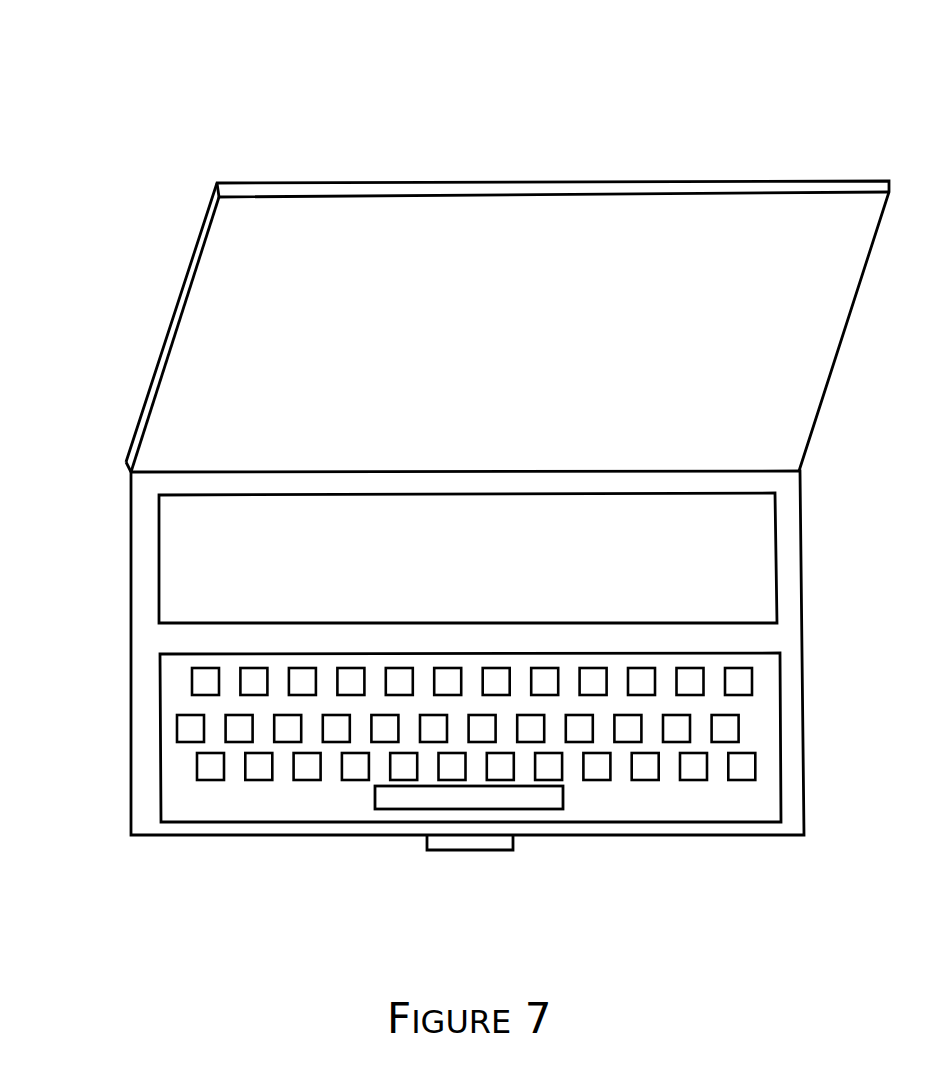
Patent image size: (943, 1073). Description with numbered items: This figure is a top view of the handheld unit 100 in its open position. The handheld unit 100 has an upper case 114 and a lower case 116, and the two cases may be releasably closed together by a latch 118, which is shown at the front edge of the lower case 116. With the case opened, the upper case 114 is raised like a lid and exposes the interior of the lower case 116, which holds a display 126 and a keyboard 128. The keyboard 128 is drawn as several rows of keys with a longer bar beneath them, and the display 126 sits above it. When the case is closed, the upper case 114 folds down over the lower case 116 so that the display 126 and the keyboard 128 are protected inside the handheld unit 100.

The handheld unit 100 is at (622, 128).
The upper case 114 is at (420, 333).
The lower case 116 is at (142, 692).
The latch 118 is at (438, 853).
The display 126 is at (488, 590).
The keyboard 128 is at (638, 798).